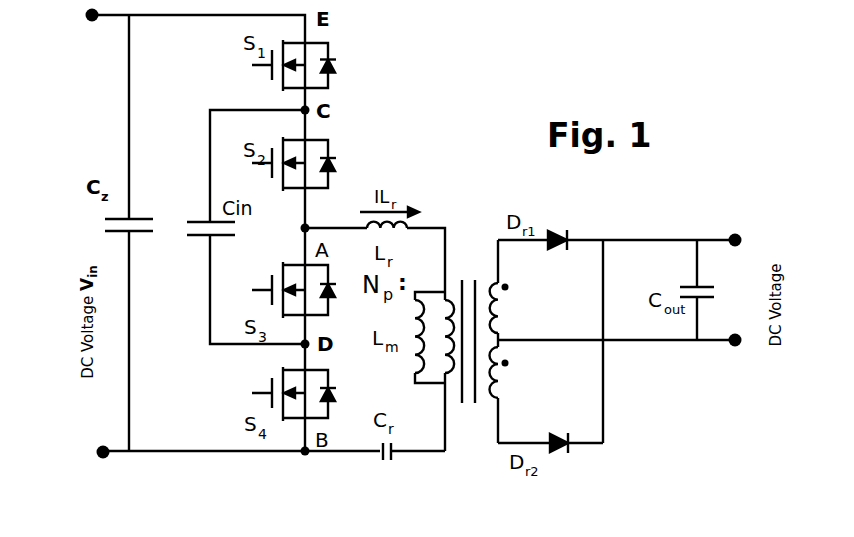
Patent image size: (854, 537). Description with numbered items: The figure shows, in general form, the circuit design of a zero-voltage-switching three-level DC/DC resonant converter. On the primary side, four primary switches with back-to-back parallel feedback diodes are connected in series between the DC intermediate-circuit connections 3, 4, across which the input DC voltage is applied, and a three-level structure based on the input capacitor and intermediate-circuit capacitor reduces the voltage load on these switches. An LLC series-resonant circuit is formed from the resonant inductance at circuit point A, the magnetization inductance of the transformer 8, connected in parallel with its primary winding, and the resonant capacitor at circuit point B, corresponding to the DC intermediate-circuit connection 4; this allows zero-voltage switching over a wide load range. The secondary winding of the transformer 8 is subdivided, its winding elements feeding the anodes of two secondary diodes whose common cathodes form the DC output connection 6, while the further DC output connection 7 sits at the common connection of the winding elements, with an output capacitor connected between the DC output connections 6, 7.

The DC intermediate-circuit connection 3 is at (86, 33).
The DC intermediate-circuit connection 4 is at (108, 472).
The DC output connection 6 is at (734, 223).
The DC output connection 7 is at (728, 355).
The transformer 8 is at (477, 321).